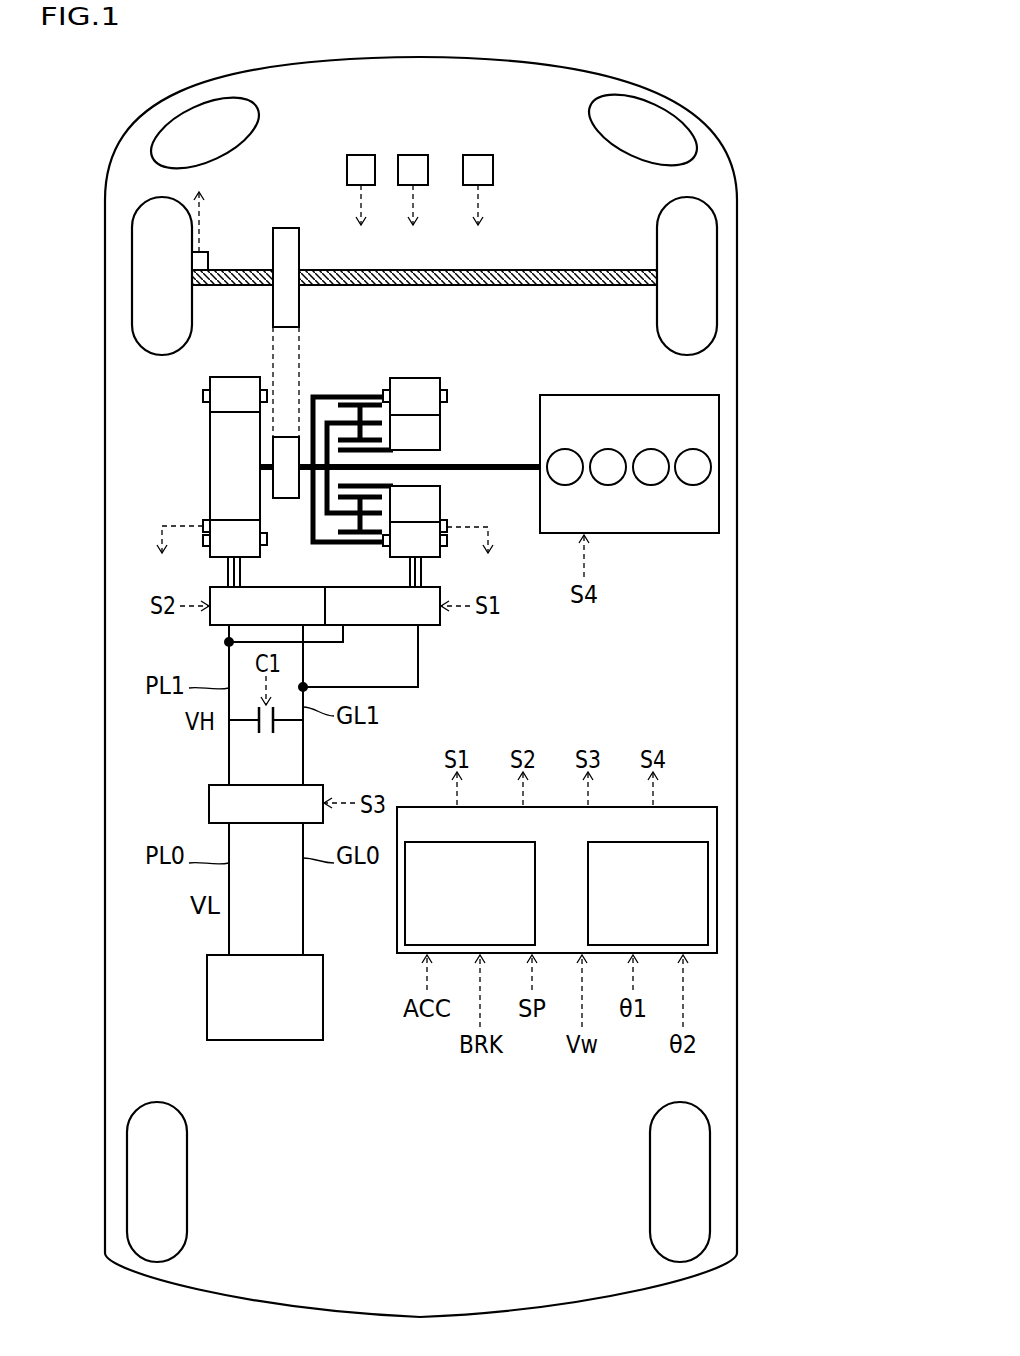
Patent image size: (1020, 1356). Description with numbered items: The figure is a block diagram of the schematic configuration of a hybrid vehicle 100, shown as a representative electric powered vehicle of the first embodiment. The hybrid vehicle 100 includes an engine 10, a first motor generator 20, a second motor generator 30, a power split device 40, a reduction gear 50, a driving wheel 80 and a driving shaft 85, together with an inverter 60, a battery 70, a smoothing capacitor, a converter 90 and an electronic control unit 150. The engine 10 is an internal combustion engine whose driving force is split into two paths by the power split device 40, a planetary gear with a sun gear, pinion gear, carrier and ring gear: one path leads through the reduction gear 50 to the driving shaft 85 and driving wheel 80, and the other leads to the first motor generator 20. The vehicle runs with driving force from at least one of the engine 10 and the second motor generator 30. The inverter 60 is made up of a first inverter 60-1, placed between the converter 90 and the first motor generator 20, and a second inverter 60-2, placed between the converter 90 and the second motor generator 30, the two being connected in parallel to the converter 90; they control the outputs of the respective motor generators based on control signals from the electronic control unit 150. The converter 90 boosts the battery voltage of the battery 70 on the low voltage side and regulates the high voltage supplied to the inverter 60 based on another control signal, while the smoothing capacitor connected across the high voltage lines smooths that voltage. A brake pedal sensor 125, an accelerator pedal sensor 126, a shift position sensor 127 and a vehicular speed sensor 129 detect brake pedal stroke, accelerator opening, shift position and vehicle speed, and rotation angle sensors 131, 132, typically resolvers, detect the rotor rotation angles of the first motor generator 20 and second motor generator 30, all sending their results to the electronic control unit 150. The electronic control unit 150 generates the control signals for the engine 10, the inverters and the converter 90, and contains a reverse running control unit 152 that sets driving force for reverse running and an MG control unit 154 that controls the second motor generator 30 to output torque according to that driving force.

The hybrid vehicle 100 is at (180, 61).
The engine 10 is at (600, 395).
The first MG 20 is at (414, 378).
The second MG 30 is at (236, 377).
The power split device 40 is at (348, 395).
The reduction gear 50 is at (285, 224).
The inverter 60 is at (290, 605).
The first inverter 60-1 is at (342, 587).
The second inverter 60-2 is at (261, 587).
The battery 70 is at (207, 968).
The driving wheel 80 is at (717, 283).
The driving shaft 85 is at (490, 286).
The converter 90 is at (209, 800).
The brake pedal sensor 125 is at (361, 155).
The accelerator pedal sensor 126 is at (413, 155).
The shift position sensor 127 is at (478, 155).
The vehicular speed sensor 129 is at (208, 258).
The rotation angle sensor 131 is at (447, 520).
The rotation angle sensor 132 is at (208, 518).
The electronic control unit 150 is at (526, 880).
The reverse running control unit 152 is at (470, 842).
The MG control unit 154 is at (646, 842).